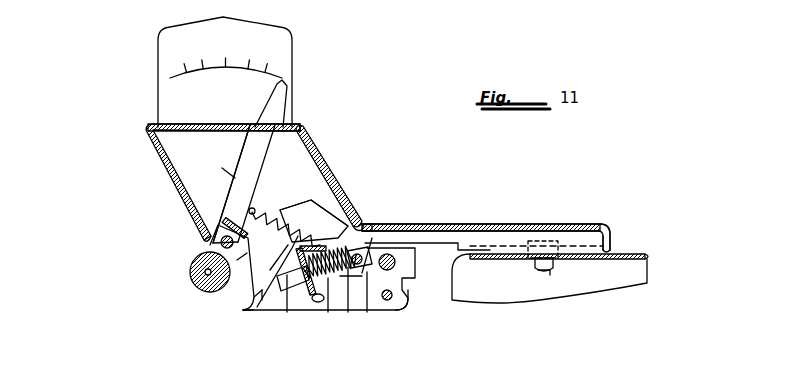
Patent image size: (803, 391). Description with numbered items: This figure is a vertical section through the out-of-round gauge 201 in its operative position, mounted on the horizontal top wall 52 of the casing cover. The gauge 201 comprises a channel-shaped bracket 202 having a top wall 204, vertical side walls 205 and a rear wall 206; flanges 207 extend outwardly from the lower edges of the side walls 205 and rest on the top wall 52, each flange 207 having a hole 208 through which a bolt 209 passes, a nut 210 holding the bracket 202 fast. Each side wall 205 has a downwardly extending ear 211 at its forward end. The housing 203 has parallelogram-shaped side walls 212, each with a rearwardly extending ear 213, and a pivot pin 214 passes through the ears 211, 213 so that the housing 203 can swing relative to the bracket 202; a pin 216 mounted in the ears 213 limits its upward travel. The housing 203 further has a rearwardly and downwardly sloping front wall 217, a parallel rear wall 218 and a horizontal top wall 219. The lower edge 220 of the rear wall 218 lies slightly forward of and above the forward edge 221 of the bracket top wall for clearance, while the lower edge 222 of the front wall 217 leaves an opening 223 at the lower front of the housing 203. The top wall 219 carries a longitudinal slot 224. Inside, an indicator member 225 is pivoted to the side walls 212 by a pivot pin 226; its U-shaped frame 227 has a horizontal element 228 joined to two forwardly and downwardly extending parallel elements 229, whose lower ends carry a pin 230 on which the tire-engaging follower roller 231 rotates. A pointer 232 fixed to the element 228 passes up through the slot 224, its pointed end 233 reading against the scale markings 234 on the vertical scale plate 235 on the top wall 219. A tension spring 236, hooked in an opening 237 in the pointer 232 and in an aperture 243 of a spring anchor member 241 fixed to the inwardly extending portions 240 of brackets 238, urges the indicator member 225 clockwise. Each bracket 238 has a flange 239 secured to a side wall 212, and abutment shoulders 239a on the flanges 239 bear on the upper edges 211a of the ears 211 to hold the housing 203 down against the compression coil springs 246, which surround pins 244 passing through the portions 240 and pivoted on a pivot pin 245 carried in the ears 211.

The top wall 52 is at (642, 258).
The out-of-round gauge 201 is at (135, 210).
The bracket 202 is at (480, 222).
The housing 203 is at (345, 157).
The top wall 204 is at (540, 224).
The side walls 205 is at (470, 252).
The rear wall 206 is at (612, 236).
The flanges 207 is at (612, 251).
The hole 208 is at (530, 252).
The bolt 209 is at (556, 275).
The nut 210 is at (560, 268).
The ear 211 is at (372, 305).
The upper edges 211a is at (360, 300).
The side walls 212 is at (280, 290).
The ear 213 is at (412, 295).
The pivot pin 214 is at (396, 263).
The pin 216 is at (392, 296).
The front wall 217 is at (160, 152).
The rear wall 218 is at (312, 152).
The top wall 219 is at (275, 140).
The lower edge 220 is at (352, 213).
The forward edge 221 is at (370, 226).
The lower edge 222 is at (208, 240).
The opening 223 is at (224, 269).
The longitudinal slot 224 is at (193, 125).
The indicator member 225 is at (235, 178).
The pivot pin 226 is at (220, 245).
The U-shaped frame 227 is at (237, 260).
The horizontal element 228 is at (230, 218).
The parallel elements 229 is at (271, 271).
The pin 230 is at (200, 278).
The follower roller 231 is at (207, 273).
The pointer 232 is at (252, 125).
The pointed end 233 is at (290, 93).
The scale indicia 234 is at (263, 67).
The scale plate 235 is at (160, 42).
The tension spring 236 is at (288, 205).
The opening 237 is at (255, 209).
The brackets 238 is at (250, 317).
The flange 239 is at (312, 200).
The abutment shoulders 239a is at (330, 233).
The inwardly extending portion 240 is at (318, 300).
The spring anchor member 241 is at (330, 290).
The aperture 243 is at (262, 290).
The pins 244 is at (300, 291).
The pivot pin 245 is at (372, 262).
The compression coil spring 246 is at (340, 290).